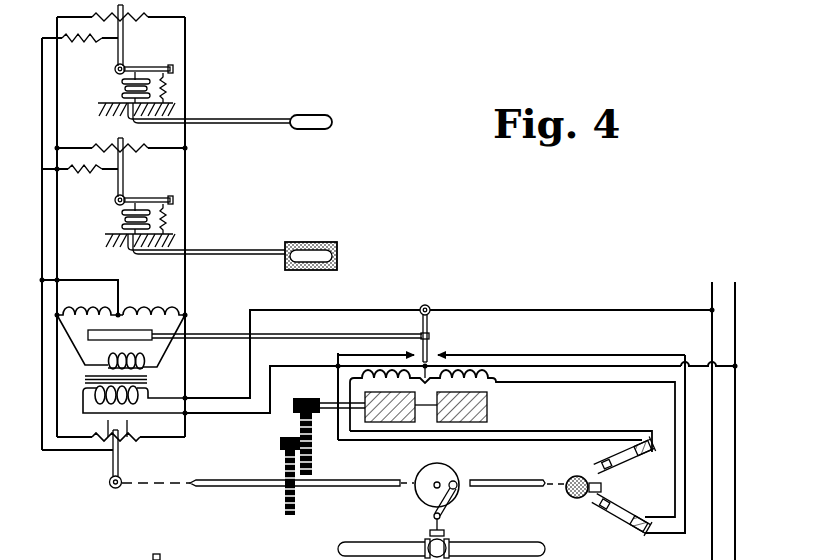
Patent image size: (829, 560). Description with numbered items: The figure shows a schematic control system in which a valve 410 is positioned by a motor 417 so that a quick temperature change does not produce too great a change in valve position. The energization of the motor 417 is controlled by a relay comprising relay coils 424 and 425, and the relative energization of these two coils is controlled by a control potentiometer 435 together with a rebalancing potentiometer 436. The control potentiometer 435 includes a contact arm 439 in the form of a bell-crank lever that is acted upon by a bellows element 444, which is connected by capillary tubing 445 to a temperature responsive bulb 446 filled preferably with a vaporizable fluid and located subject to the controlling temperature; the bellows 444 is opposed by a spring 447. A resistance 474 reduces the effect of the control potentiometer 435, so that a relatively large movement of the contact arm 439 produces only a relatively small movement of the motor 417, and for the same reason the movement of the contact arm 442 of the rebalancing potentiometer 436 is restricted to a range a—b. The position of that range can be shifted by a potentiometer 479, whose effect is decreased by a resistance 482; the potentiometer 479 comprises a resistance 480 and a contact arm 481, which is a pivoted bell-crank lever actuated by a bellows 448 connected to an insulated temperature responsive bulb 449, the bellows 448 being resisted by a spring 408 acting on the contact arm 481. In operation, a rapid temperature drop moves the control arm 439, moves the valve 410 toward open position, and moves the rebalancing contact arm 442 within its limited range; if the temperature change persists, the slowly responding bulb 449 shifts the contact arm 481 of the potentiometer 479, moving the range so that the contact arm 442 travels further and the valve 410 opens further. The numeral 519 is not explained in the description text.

The control potentiometer 435 is at (139, 38).
The contact arm 439 is at (125, 31).
The resistance 474 is at (88, 44).
The bellows element 444 is at (122, 90).
The spring 447 is at (170, 88).
The capillary tubing 445 is at (256, 119).
The temperature responsive bulb 446 is at (315, 119).
The potentiometer 479 is at (142, 157).
The contact arm 481 is at (123, 166).
The resistance 480 is at (104, 148).
The resistance 482 is at (82, 176).
The spring 408 is at (170, 223).
The bellows 448 is at (122, 221).
The insulated temperature responsive bulb 449 is at (322, 246).
The relay coil 424 is at (90, 312).
The relay coil 425 is at (153, 312).
The motor 417 is at (503, 408).
The rebalancing potentiometer 436 is at (99, 460).
The contact arm 442 is at (118, 452).
The valve 410 is at (460, 527).
The conduit 519 is at (170, 559).